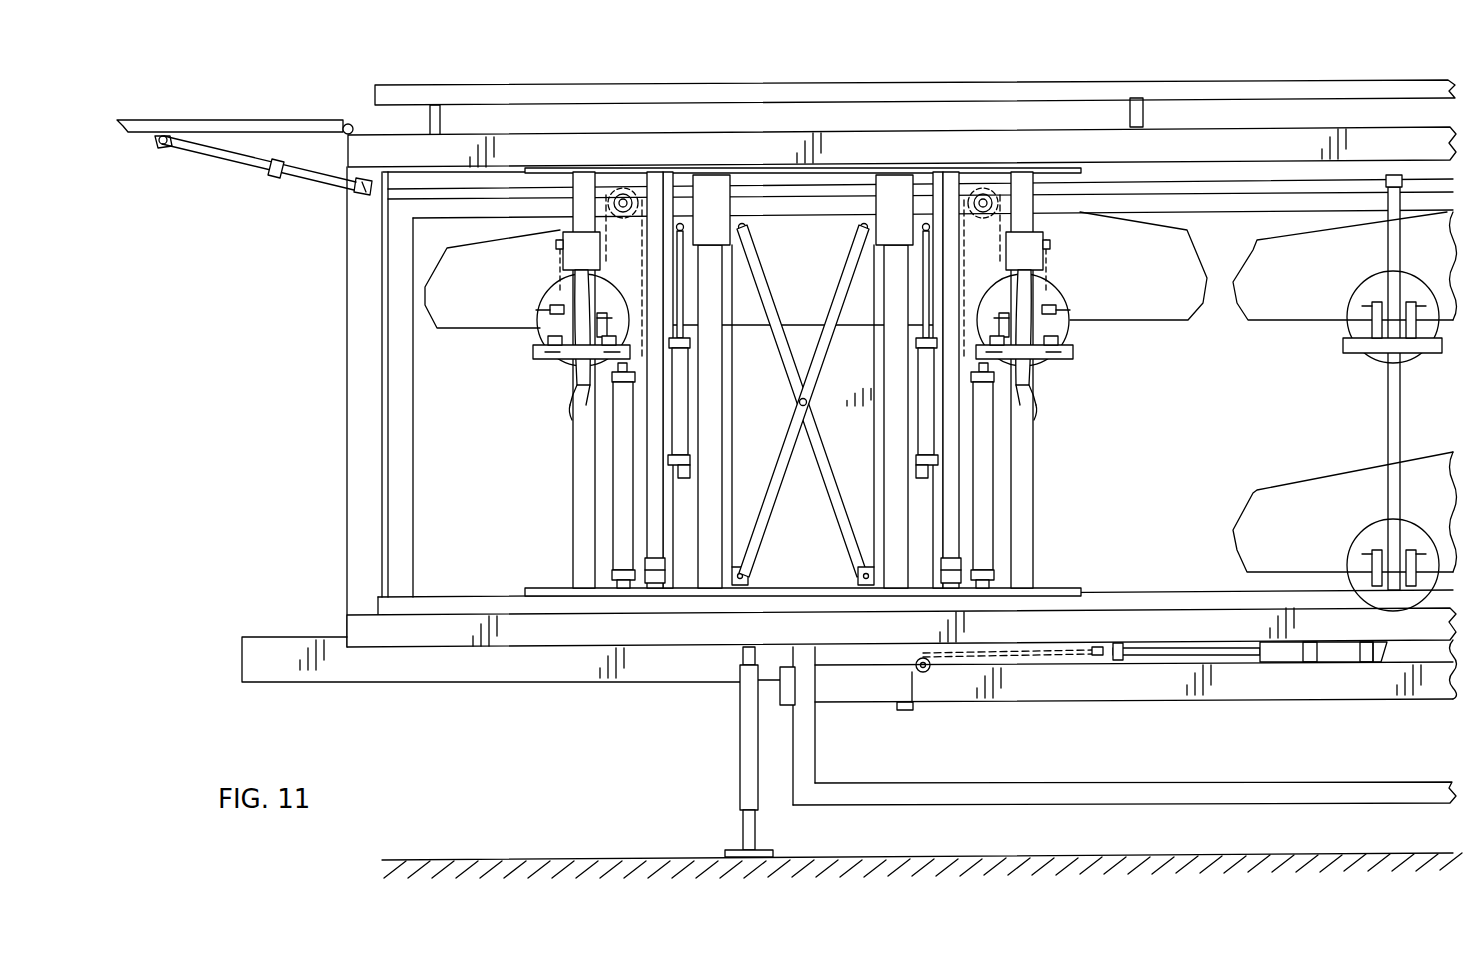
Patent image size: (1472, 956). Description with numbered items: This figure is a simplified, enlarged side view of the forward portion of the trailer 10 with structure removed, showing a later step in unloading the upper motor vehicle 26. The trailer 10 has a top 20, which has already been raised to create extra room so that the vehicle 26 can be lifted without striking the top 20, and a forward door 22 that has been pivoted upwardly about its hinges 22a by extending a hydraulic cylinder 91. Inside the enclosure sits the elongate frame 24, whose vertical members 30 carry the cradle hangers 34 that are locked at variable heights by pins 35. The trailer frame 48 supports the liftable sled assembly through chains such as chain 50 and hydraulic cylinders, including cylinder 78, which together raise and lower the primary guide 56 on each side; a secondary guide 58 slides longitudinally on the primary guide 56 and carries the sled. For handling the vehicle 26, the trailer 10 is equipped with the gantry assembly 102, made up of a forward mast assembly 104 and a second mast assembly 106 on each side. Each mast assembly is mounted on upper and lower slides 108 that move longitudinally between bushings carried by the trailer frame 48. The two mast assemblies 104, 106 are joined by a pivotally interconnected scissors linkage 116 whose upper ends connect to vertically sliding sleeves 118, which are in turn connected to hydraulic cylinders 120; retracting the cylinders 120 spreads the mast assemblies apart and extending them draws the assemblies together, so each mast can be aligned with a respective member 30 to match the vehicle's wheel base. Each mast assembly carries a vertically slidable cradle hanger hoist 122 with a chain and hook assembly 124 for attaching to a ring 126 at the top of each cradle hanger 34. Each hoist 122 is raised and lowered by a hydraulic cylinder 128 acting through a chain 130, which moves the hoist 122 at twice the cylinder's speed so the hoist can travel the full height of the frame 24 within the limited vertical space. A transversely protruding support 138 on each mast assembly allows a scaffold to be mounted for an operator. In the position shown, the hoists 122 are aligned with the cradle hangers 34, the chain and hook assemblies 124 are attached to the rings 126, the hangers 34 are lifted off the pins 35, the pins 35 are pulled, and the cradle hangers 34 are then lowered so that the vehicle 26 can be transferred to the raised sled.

The trailer 10 is at (1078, 56).
The top 20 is at (1290, 82).
The door 22 is at (203, 118).
The hinges 22a is at (351, 124).
The frame 24 is at (412, 493).
The motor vehicle 26 is at (740, 307).
The vertical members 30 is at (560, 372).
The cradle hangers 34 is at (553, 353).
The pins 35 is at (573, 407).
The trailer frame 48 is at (370, 133).
The chain 50 is at (917, 682).
The primary guide 56 is at (858, 690).
The secondary guide 58 is at (503, 670).
The hydraulic cylinder 78 is at (1342, 650).
The hydraulic cylinder 91 is at (322, 188).
The gantry assembly 102 is at (1098, 440).
The forward mast assembly 104 is at (570, 495).
The mast assembly 106 is at (1035, 482).
The upper and lower slides 108 is at (669, 167).
The scissors linkage 116 is at (823, 487).
The vertically-sliding sleeves 118 is at (710, 183).
The hydraulic cylinders 120 is at (917, 412).
The cradle hanger hoist 122 is at (560, 248).
The chain and hook assembly 124 is at (560, 308).
The ring 126 is at (570, 332).
The hydraulic cylinder 128 is at (613, 535).
The chain 130 is at (622, 188).
The transversely-protruding support 138 is at (655, 573).